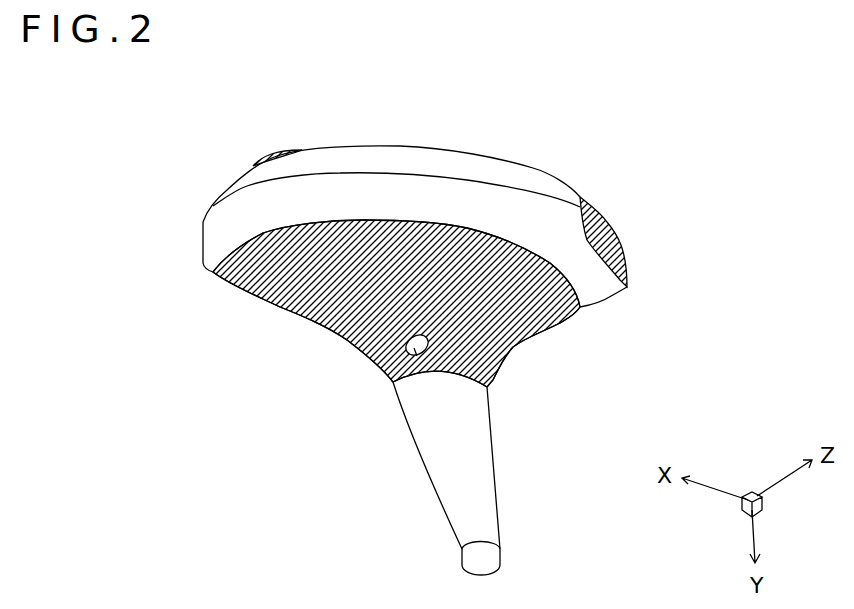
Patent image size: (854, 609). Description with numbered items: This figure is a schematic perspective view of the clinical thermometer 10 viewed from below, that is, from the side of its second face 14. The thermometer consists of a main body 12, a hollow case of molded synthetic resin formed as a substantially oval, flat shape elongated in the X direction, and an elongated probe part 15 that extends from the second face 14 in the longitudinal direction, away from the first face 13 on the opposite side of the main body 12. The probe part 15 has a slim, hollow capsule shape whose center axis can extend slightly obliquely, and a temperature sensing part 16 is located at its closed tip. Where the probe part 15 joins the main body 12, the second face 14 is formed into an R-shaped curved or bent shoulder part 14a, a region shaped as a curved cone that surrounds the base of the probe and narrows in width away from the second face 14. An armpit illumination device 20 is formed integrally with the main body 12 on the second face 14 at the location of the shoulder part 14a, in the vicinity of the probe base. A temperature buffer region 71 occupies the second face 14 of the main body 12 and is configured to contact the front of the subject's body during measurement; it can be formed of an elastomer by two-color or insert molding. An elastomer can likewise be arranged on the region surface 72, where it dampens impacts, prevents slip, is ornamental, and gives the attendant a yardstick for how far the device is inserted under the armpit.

The clinical thermometer 10 is at (551, 126).
The main body 12 is at (564, 178).
The first face 13 is at (352, 162).
The second face 14 is at (213, 272).
The shoulder part 14a is at (373, 323).
The probe part 15 is at (495, 427).
The temperature sensing part 16 is at (491, 548).
The armpit illumination device 20 is at (410, 367).
The temperature buffer region 71 is at (277, 292).
The elastomer region surface 72 is at (627, 242).